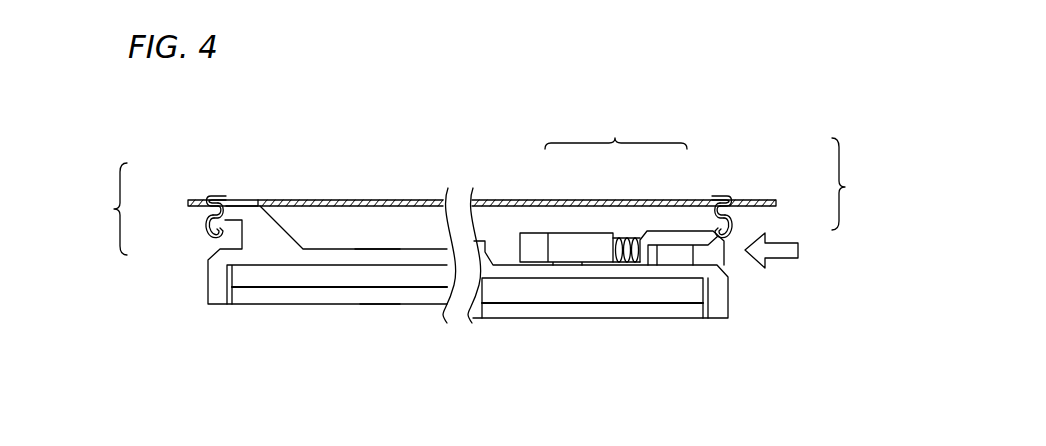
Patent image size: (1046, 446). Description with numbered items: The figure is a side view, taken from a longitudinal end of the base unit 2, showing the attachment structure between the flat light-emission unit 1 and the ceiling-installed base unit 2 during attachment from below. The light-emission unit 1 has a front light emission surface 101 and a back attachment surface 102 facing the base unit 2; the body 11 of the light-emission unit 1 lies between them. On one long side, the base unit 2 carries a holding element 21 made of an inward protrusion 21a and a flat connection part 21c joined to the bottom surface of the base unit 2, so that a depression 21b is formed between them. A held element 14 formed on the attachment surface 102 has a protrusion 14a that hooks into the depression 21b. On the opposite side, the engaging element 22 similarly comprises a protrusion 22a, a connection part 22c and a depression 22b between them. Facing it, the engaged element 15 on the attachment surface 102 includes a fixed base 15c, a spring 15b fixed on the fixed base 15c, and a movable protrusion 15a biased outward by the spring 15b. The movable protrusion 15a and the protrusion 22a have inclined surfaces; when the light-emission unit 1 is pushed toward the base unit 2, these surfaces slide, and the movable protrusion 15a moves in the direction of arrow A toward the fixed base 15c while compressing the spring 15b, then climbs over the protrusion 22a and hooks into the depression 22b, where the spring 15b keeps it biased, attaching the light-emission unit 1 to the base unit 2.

The light-emission unit 1 is at (217, 297).
The base unit 2 is at (502, 200).
The board 11 is at (320, 304).
The held element 14 is at (272, 237).
The protrusion 14a is at (239, 206).
The engaged element 15 is at (622, 186).
The movable protrusion 15a is at (668, 236).
The spring 15b is at (623, 240).
The fixed base 15c is at (582, 238).
The holding element 21 is at (156, 208).
The protrusion 21a is at (214, 231).
The depression 21b is at (219, 210).
The connection part 21c is at (213, 198).
The engaging element 22 is at (791, 188).
The protrusion 22a is at (727, 226).
The depression 22b is at (726, 204).
The connection part 22c is at (721, 198).
The light emission surface 101 is at (377, 304).
The attachment surface 102 is at (375, 249).
The arrow A is at (777, 256).